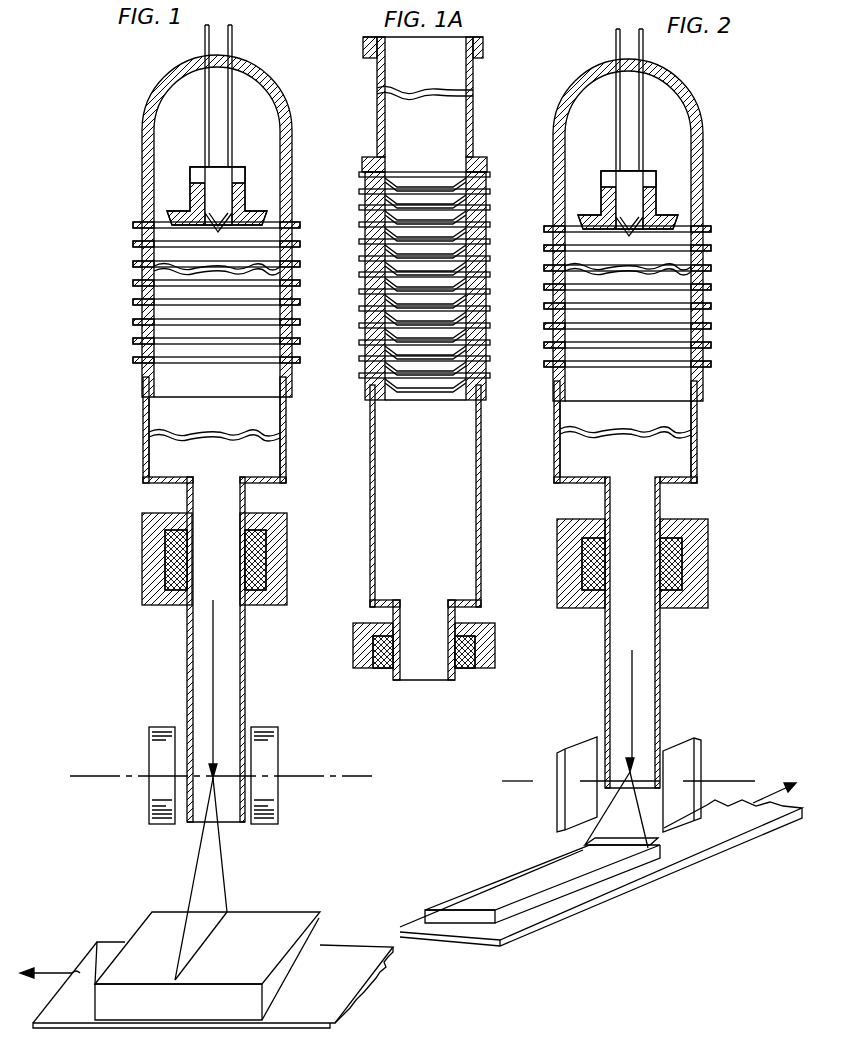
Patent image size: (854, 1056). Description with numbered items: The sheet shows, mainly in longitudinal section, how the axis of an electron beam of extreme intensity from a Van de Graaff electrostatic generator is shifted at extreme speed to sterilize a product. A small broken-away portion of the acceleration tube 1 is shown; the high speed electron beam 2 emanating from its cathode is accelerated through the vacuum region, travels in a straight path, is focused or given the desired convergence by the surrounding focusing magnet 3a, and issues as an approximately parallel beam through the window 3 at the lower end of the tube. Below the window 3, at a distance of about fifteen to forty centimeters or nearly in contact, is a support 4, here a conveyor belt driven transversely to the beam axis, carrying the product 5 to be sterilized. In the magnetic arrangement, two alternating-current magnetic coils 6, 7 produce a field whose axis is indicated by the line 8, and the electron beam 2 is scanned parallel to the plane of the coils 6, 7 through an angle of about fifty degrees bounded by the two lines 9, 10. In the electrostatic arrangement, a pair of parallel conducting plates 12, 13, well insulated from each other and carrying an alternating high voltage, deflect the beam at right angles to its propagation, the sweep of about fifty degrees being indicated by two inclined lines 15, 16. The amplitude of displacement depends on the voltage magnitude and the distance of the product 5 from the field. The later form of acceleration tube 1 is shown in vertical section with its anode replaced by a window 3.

In FIG. 1, the acceleration tube 1 is at (126, 295).
In FIG. 1A, the acceleration tube 1 is at (346, 401).
In FIG. 2, the acceleration tube 1 is at (728, 350).
In FIG. 1, the electron beam 2 is at (213, 696).
In FIG. 2, the electron beam 2 is at (632, 713).
In FIG. 1, the window 3 is at (231, 822).
In FIG. 1A, the window 3 is at (442, 683).
In FIG. 2, the window 3 is at (639, 788).
In FIG. 1, the focusing magnet 3a is at (287, 545).
In FIG. 1A, the focusing magnet 3a is at (495, 647).
In FIG. 2, the focusing magnet 3a is at (708, 529).
In FIG. 1, the support 4 is at (393, 962).
In FIG. 2, the support 4 is at (704, 841).
In FIG. 1, the product 5 is at (275, 919).
In FIG. 2, the product 5 is at (512, 876).
In FIG. 1, the alternating-current magnetic coil 6 is at (160, 741).
In FIG. 1, the alternating-current magnetic coil 7 is at (272, 750).
In FIG. 1, the axis of the alternating-current magnetic field 8 is at (332, 779).
In FIG. 1, the line indicating extent of scanning movement 9 is at (225, 883).
In FIG. 1, the line indicating extent of scanning movement 10 is at (194, 873).
In FIG. 2, the parallel conducting plate 12 is at (568, 763).
In FIG. 2, the parallel conducting plate 13 is at (693, 760).
In FIG. 2, the inclined line indicating extent of scanning movement 15 is at (639, 822).
In FIG. 2, the inclined line indicating extent of scanning movement 16 is at (583, 840).